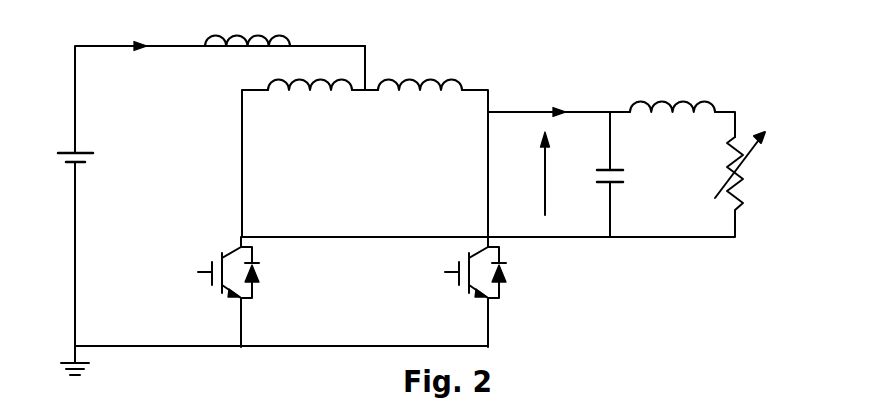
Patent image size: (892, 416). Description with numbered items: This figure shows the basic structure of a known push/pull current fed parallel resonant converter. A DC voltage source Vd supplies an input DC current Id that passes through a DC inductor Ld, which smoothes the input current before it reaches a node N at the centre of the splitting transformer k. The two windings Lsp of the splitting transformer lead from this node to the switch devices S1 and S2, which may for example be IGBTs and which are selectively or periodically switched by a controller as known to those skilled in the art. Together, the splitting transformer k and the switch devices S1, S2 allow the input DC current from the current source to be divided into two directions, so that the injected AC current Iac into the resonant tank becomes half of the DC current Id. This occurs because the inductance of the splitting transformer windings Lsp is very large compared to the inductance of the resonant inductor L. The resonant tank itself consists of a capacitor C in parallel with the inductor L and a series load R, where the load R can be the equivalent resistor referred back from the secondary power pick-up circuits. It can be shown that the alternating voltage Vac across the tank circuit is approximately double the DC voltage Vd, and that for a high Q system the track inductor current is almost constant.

The DC voltage Vd is at (88, 160).
The input DC current Id is at (131, 34).
The DC inductor Ld is at (235, 31).
The node N is at (358, 54).
The splitting transformer windings Lsp is at (365, 105).
The splitting transformer k is at (401, 63).
The injected AC current Iac is at (552, 95).
The alternating voltage across the tank circuit Vac is at (528, 173).
The capacitor C is at (597, 177).
The inductor L is at (672, 94).
The series load R is at (731, 172).
The switch device S1 is at (228, 292).
The switch device S2 is at (475, 292).